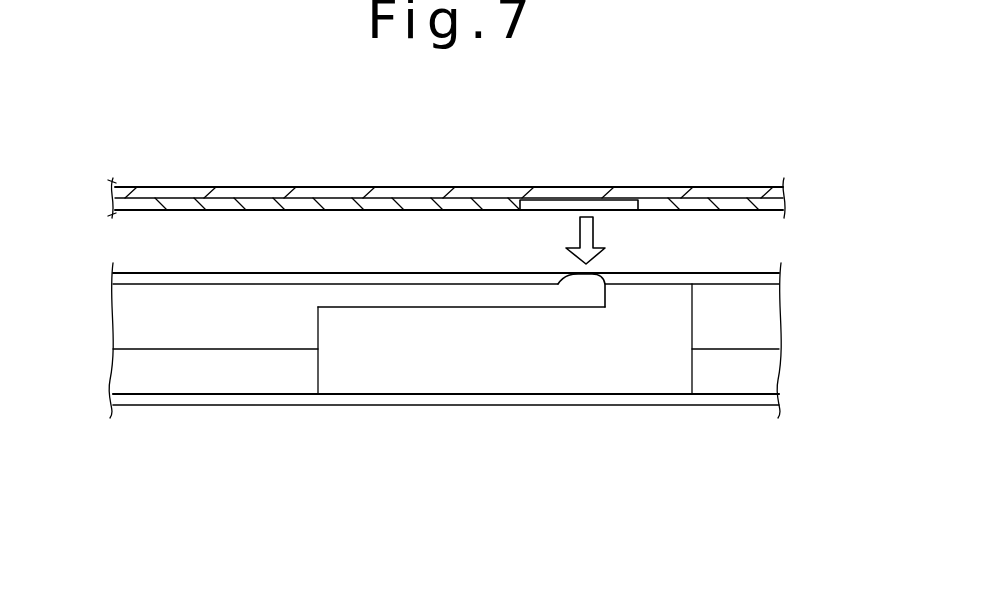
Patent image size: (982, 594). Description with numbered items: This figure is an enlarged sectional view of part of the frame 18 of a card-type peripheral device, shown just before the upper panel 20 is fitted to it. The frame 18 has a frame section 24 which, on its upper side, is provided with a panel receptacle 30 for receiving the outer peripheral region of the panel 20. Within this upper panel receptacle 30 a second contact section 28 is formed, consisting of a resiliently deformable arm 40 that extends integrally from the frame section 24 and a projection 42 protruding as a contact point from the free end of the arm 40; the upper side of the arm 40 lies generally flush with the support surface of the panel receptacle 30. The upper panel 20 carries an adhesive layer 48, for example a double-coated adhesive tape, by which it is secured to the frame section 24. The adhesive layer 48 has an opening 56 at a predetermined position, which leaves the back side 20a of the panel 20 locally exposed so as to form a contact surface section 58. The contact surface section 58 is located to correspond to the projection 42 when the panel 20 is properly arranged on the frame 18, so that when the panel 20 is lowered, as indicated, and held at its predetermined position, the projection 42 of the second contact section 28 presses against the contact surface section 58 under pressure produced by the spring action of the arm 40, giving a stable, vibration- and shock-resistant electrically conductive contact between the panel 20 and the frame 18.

The frame 18 is at (558, 410).
The upper panel 20 is at (360, 186).
The back side of the upper panel 20a is at (255, 202).
The frame section 24 is at (278, 406).
The second contact section 28 is at (499, 311).
The panel receptacle 30 is at (209, 284).
The resiliently deformable arm 40 is at (428, 297).
The projection 42 is at (585, 283).
The adhesive layer 48 is at (700, 212).
The opening 56 is at (632, 199).
The contact surface section 58 is at (554, 203).